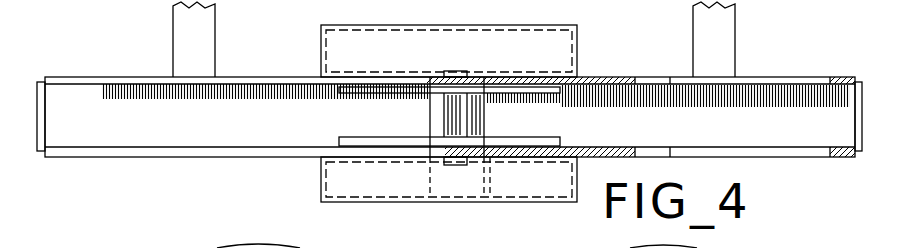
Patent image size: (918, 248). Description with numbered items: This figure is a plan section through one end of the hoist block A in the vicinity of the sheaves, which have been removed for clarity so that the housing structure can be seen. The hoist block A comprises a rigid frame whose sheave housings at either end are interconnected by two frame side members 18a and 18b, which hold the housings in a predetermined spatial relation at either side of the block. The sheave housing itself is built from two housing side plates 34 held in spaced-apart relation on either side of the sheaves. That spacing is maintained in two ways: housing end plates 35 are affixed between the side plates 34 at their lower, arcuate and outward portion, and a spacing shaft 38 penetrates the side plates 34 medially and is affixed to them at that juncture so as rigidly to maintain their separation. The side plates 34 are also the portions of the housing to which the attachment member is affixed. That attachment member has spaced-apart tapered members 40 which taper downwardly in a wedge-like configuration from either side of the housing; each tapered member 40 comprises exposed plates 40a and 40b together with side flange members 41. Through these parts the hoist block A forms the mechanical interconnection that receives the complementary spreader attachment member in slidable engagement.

The frame side member 18a is at (173, 33).
The frame side member 18b is at (735, 32).
The housing side plate 34 is at (269, 76).
The housing end plate 35 is at (31, 137).
The spacing shaft 38 is at (452, 70).
The tapered member 40 is at (467, 124).
The exposed plate 40a is at (453, 203).
The exposed plate 40b is at (545, 25).
The side flange member 41 is at (578, 53).
The hoist block A is at (300, 163).